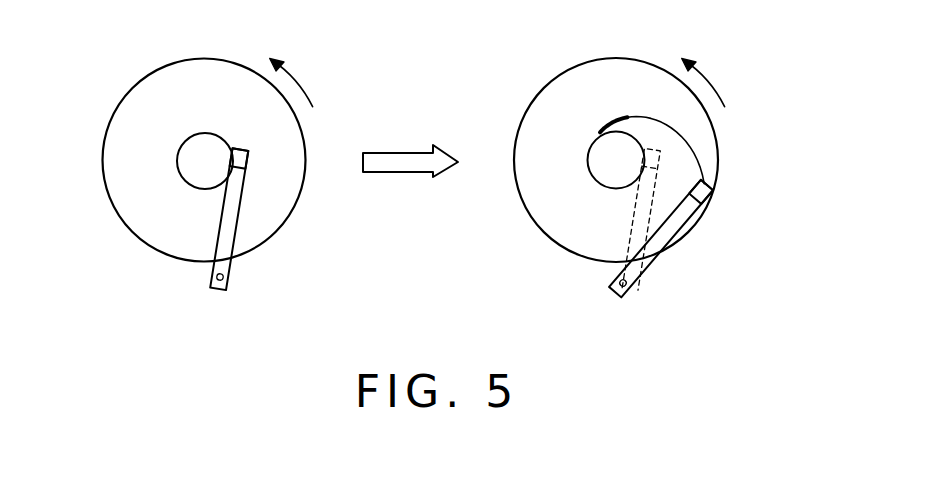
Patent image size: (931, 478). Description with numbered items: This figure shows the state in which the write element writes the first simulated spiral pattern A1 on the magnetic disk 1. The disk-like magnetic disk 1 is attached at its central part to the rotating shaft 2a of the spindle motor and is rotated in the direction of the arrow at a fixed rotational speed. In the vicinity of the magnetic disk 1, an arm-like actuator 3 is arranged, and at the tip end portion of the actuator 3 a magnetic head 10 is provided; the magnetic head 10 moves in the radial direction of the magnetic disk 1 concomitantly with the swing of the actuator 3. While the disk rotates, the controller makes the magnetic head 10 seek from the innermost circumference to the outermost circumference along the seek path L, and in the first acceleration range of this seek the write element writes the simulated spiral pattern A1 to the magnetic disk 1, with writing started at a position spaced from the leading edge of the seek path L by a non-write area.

The magnetic disk 1 is at (146, 81).
The rotating shaft 2a is at (197, 163).
The actuator 3 is at (238, 243).
The magnetic head 10 is at (250, 155).
The simulated spiral pattern A1 is at (608, 120).
The seek path L is at (687, 134).